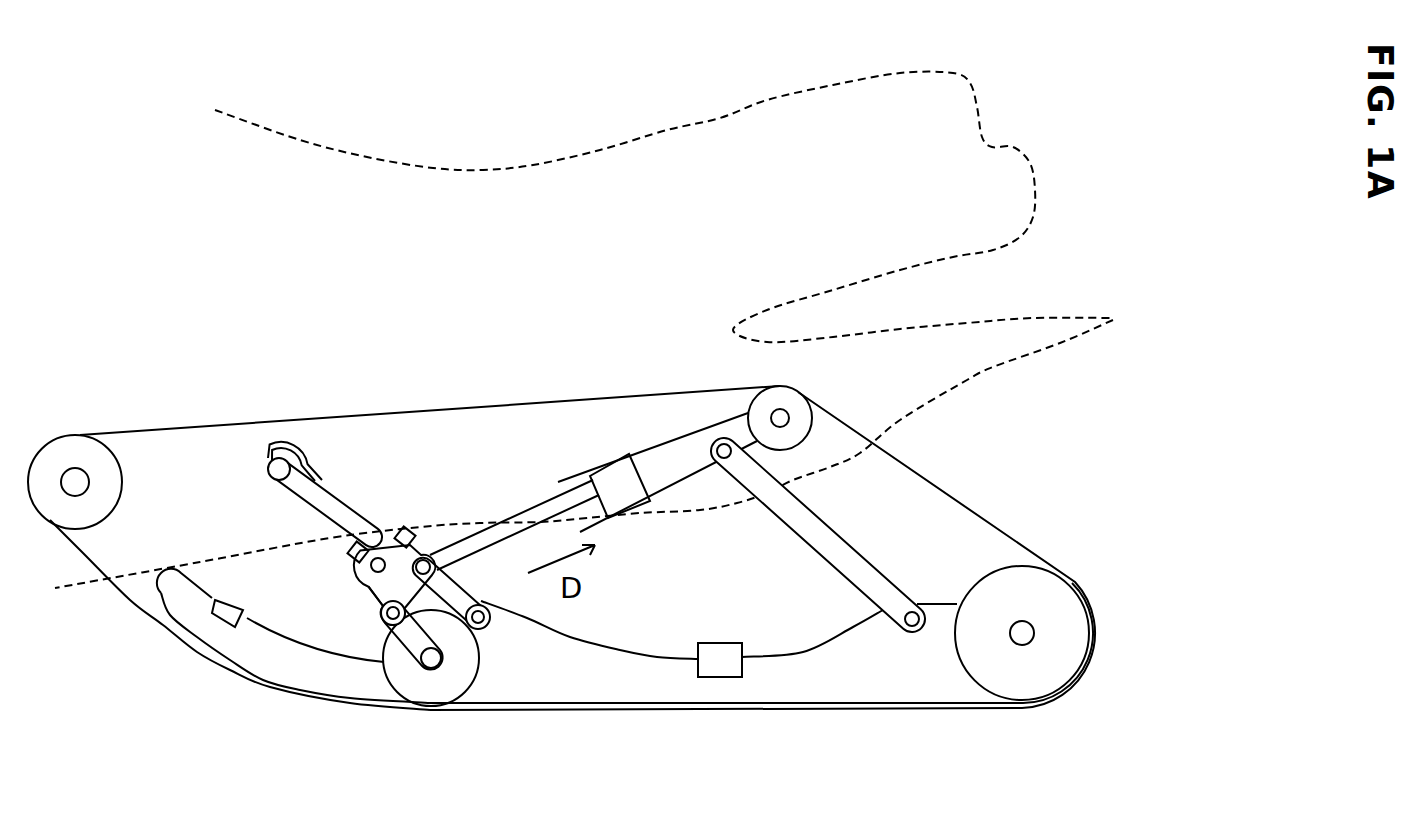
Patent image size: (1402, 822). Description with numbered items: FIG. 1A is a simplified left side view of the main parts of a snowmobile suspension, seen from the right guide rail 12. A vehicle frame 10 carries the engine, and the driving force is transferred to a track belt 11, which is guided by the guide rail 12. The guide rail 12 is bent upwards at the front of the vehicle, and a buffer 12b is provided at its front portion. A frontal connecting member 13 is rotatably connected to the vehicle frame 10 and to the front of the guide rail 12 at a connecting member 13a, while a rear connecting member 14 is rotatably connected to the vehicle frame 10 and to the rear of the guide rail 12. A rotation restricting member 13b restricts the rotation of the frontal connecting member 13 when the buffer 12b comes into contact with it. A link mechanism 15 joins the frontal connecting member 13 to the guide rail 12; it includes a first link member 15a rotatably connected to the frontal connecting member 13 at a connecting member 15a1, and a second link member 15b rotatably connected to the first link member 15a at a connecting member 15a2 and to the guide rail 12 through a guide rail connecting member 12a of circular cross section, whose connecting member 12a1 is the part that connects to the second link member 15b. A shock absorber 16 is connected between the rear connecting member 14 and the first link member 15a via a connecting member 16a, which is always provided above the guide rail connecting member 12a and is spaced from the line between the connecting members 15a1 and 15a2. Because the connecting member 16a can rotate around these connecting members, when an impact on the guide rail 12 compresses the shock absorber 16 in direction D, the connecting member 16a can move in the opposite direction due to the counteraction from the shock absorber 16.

The vehicle frame 10 is at (1113, 319).
The track belt 11 is at (1013, 535).
The guide rail 12 is at (339, 641).
The guide rail connecting member 12a is at (445, 702).
The connecting member 12a1 is at (423, 670).
The buffer 12b is at (215, 600).
The frontal connecting member 13 is at (301, 454).
The connecting member 13a is at (490, 620).
The rotation restricting member 13b is at (267, 462).
The rear connecting member 14 is at (898, 583).
The link mechanism 15 is at (347, 600).
The first link member 15a is at (350, 600).
The connecting member 15a1 is at (378, 555).
The connecting member 15a2 is at (387, 622).
The second link member 15b is at (382, 615).
The shock absorber 16 is at (621, 442).
The connecting member 16a is at (433, 553).